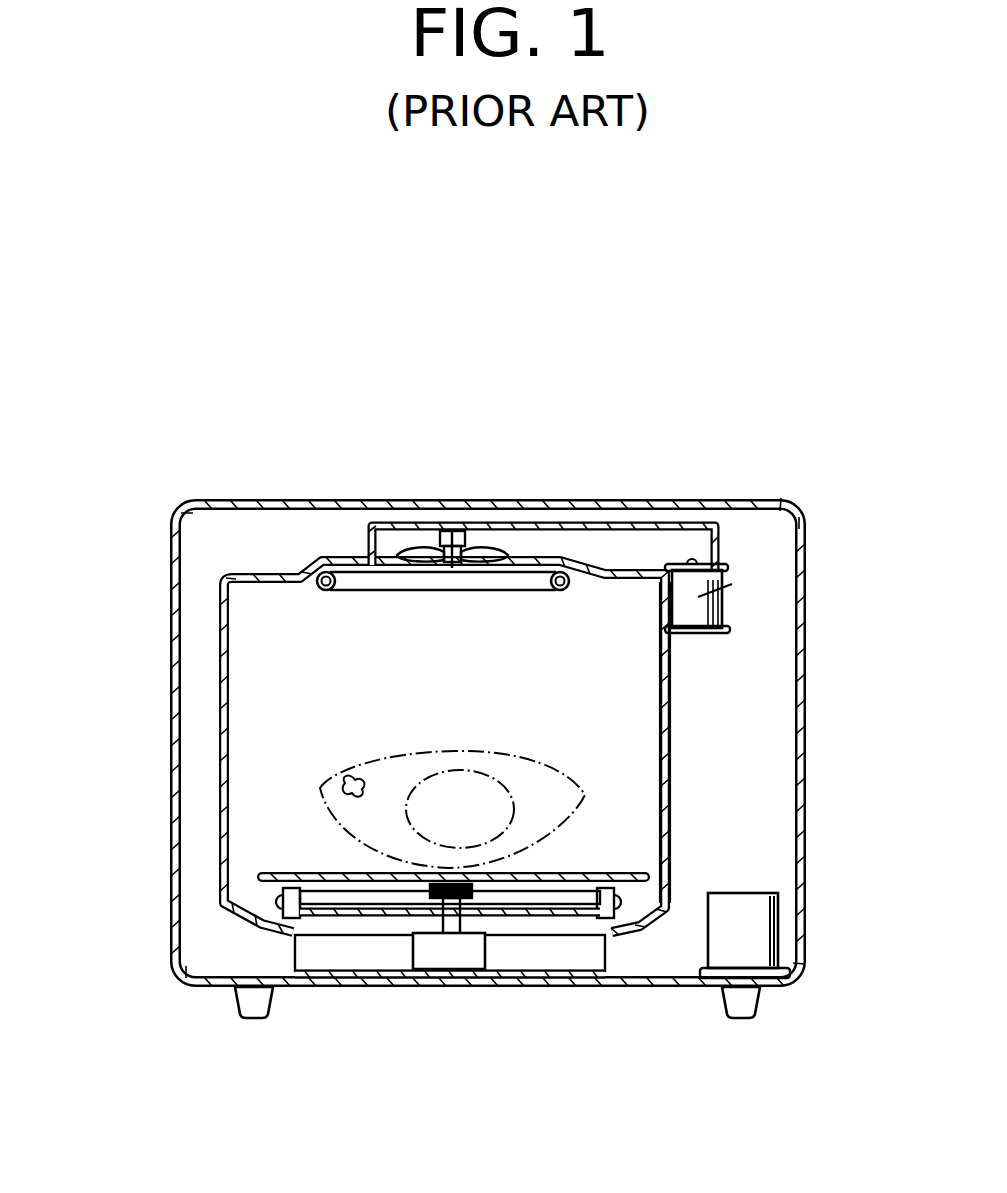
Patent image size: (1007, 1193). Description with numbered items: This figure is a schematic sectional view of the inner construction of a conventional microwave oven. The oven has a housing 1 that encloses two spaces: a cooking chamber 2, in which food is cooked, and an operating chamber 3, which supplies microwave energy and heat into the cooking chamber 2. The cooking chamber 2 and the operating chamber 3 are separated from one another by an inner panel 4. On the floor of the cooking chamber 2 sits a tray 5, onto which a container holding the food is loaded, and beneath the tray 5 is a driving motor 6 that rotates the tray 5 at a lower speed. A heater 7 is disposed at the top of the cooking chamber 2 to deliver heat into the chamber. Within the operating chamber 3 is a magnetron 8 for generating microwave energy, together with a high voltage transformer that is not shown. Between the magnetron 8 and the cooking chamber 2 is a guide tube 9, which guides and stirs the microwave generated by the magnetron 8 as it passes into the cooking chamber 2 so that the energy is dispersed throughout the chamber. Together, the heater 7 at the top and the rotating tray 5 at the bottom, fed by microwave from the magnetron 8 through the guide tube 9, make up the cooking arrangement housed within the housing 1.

The housing 1 is at (808, 652).
The cooking chamber 2 is at (255, 732).
The operating chamber 3 is at (752, 808).
The inner panel 4 is at (672, 752).
The tray 5 is at (350, 880).
The driving motor 6 is at (455, 950).
The heater 7 is at (458, 556).
The magnetron 8 is at (750, 562).
The guide tube 9 is at (596, 548).